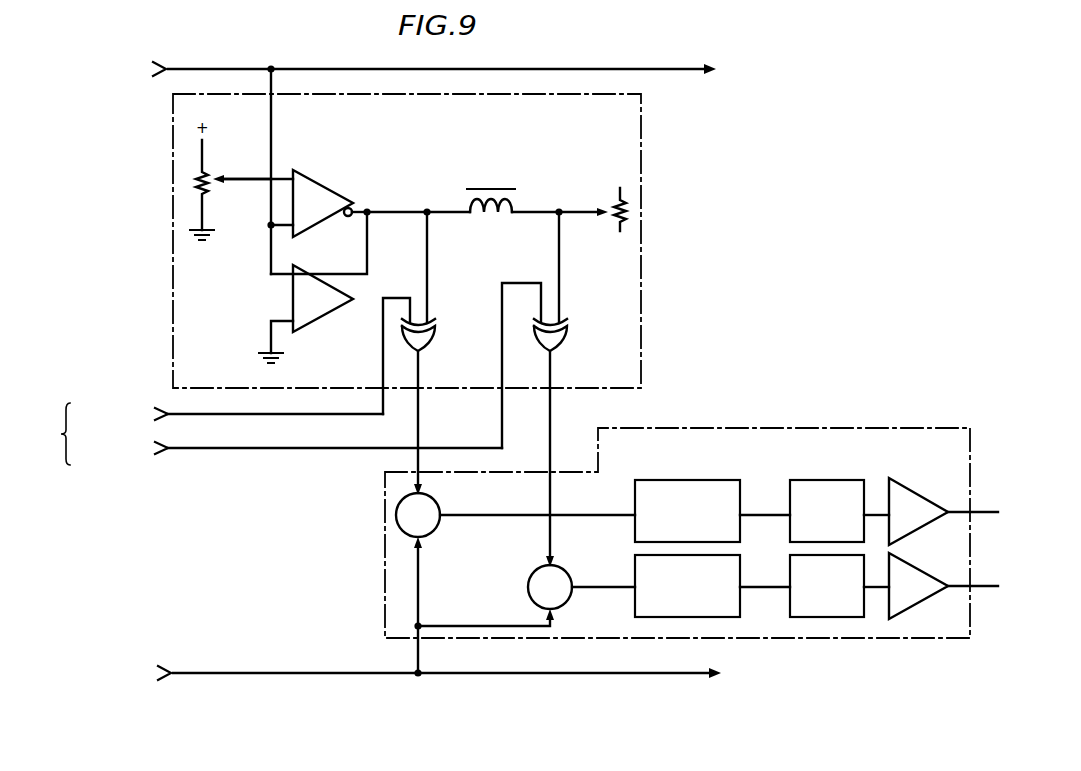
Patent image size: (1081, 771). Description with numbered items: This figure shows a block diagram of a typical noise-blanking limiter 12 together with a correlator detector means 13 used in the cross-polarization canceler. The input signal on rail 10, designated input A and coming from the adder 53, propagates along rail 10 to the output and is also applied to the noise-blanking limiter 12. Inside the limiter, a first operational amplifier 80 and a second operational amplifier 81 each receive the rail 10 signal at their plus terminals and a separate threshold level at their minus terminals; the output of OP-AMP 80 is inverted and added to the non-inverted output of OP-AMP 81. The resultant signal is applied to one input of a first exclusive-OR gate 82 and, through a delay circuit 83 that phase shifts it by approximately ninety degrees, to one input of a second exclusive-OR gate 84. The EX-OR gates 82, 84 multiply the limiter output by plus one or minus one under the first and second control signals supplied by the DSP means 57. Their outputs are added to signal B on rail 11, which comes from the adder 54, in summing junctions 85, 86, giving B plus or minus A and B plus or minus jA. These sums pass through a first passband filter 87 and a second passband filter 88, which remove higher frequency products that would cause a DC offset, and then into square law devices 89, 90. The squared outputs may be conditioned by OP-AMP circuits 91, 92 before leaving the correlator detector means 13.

The rail 10 is at (297, 69).
The rail 11 is at (263, 672).
The noise-blanking limiter 12 is at (550, 164).
The correlator detector means 13 is at (845, 459).
The adder 53 is at (100, 107).
The adder 54 is at (167, 717).
The digital signal processor (DSP) means 57 is at (42, 461).
The first operational amplifier 80 is at (330, 193).
The second operational amplifier 81 is at (318, 277).
The first exclusive-OR gate 82 is at (437, 330).
The delay circuit 83 is at (489, 220).
The second exclusive-OR gate 84 is at (569, 330).
The summing junction 85 is at (442, 529).
The summing junction 86 is at (561, 570).
The first passband filter 87 is at (634, 497).
The second passband filter 88 is at (634, 600).
The square law device 89 is at (790, 485).
The square law device 90 is at (792, 567).
The OP-AMP circuit 91 is at (918, 500).
The OP-AMP circuit 92 is at (924, 573).